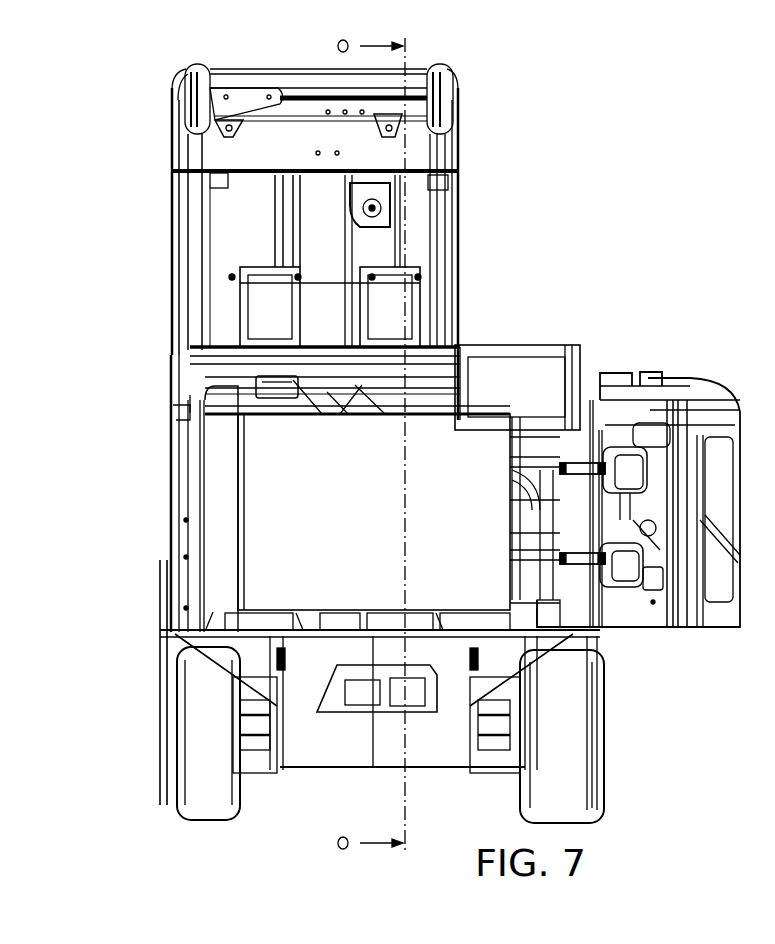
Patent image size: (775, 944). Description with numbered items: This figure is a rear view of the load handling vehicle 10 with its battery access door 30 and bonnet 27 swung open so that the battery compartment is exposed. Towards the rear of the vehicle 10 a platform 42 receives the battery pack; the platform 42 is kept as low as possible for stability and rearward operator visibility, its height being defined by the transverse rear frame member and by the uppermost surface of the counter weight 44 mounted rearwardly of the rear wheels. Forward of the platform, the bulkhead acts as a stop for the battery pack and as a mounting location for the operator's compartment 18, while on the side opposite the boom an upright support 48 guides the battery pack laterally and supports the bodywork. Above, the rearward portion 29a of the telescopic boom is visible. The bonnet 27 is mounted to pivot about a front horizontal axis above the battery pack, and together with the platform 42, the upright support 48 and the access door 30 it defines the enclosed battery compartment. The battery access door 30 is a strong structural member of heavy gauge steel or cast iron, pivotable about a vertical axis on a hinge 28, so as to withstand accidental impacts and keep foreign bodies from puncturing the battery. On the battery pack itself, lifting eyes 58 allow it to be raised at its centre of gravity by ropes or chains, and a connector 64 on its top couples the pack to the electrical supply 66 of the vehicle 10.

The vehicle 10 is at (632, 160).
The operator's compartment 18 is at (460, 108).
The bonnet 27 is at (430, 222).
The hinge 28 is at (590, 575).
The rearward portion 29a is at (543, 362).
The battery access door 30 is at (690, 377).
The platform 42 is at (312, 632).
The counter weight 44 is at (310, 745).
The upright support 48 is at (175, 505).
The lifting eyes 58 is at (338, 387).
The connector 64 is at (268, 387).
The electrical supply 66 is at (206, 387).